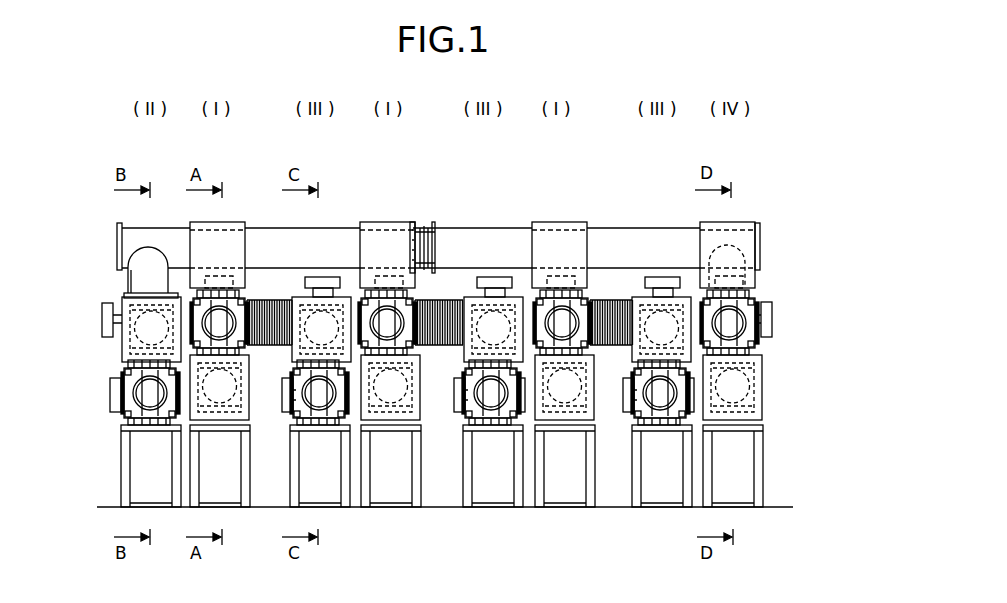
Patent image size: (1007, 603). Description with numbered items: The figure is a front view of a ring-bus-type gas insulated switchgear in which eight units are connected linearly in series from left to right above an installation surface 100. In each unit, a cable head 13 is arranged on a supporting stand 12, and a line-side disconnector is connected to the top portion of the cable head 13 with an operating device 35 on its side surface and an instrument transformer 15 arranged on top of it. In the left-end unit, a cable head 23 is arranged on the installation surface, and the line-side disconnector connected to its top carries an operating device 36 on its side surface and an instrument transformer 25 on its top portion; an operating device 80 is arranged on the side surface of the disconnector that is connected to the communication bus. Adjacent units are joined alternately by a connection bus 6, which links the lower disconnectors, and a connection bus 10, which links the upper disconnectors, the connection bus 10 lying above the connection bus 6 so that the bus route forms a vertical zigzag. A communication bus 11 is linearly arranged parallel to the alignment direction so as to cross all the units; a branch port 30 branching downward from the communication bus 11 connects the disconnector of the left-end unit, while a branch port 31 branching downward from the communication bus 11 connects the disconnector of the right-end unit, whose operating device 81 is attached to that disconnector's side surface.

The connection bus 6 is at (183, 440).
The connection bus 10 is at (277, 305).
The communication bus 11 is at (500, 240).
The supporting stand 12 is at (245, 477).
The cable head 13 is at (251, 360).
The instrument transformer 15 is at (230, 250).
The cable head 23 is at (137, 483).
The instrument transformer 25 is at (122, 343).
The branch port 30 is at (128, 278).
The branch port 31 is at (760, 250).
The operating device 35 is at (205, 315).
The operating device 36 is at (110, 400).
The operating device 80 is at (102, 312).
The operating device 81 is at (772, 320).
The installation surface 100 is at (793, 507).